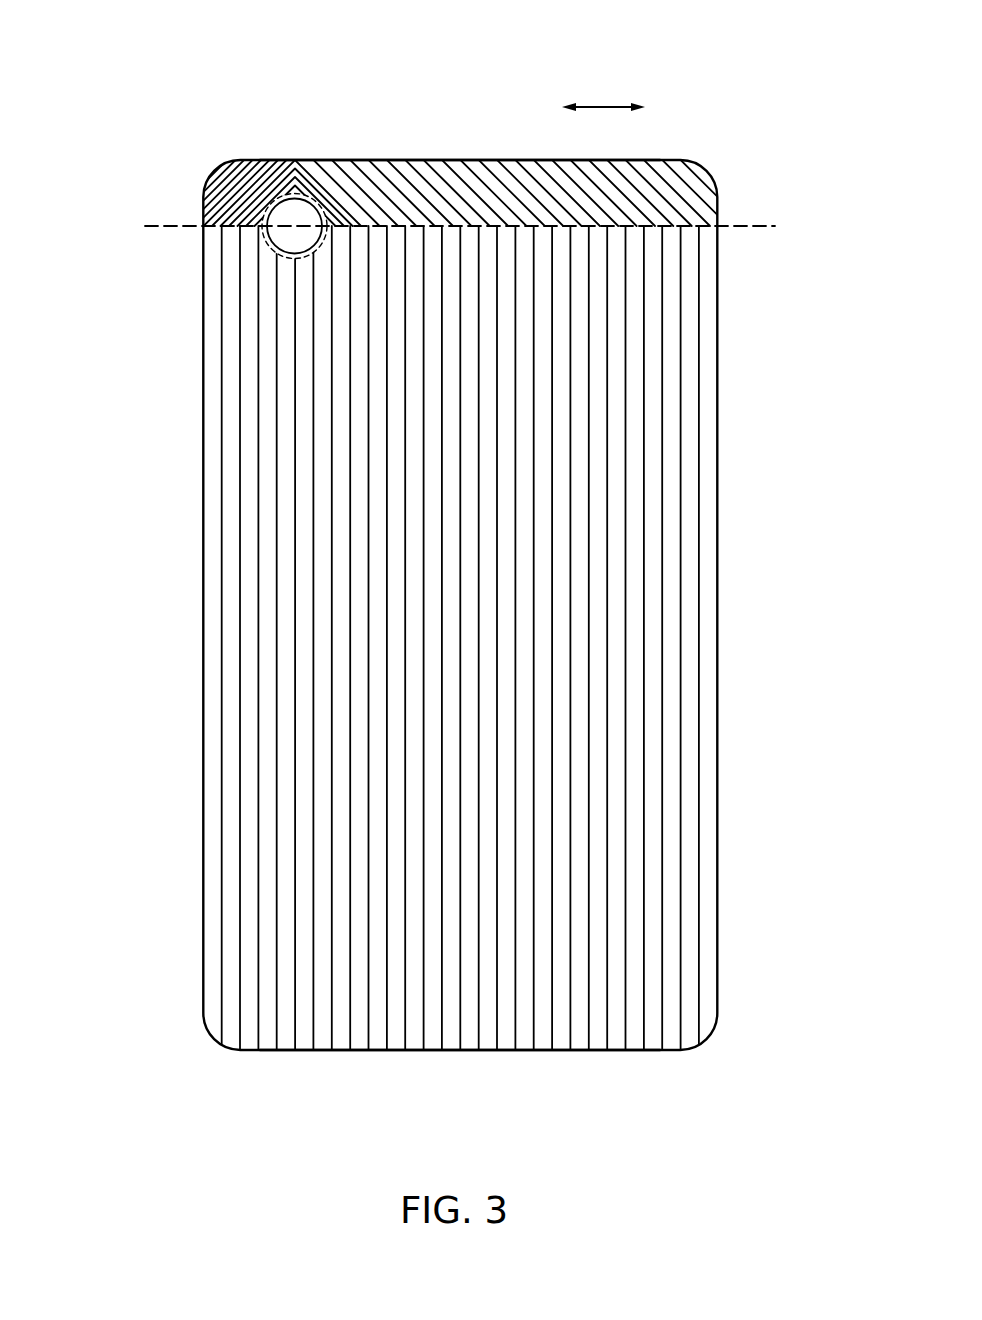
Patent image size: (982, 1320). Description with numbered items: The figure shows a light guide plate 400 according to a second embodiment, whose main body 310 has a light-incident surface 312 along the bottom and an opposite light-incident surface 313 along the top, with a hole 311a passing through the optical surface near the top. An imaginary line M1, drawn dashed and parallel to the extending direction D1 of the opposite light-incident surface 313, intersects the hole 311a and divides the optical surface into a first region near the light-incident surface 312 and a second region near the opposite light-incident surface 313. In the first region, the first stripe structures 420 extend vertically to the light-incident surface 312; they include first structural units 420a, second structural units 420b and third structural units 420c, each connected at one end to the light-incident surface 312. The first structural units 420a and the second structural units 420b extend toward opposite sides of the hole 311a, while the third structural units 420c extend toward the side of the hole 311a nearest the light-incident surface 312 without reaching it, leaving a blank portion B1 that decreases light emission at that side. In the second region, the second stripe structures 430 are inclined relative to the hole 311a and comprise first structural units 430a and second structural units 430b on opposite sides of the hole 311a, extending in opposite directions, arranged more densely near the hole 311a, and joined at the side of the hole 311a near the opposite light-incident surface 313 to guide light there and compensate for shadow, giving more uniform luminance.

The light guide plate 400 is at (103, 40).
The main body 310 is at (182, 650).
The hole 311a is at (278, 213).
The light-incident surface 312 is at (653, 1050).
The opposite light-incident surface 313 is at (448, 159).
The first stripe structures 420 is at (248, 953).
The first structural units 420a is at (257, 1054).
The second structural units 420b is at (699, 1054).
The third structural units 420c is at (312, 1054).
The second stripe structures 430 is at (367, 77).
The first structural units 430a is at (242, 163).
The second structural units 430b is at (343, 163).
The blank portion B1 is at (267, 250).
The extending direction D1 is at (603, 90).
The imaginary line M1 is at (738, 223).